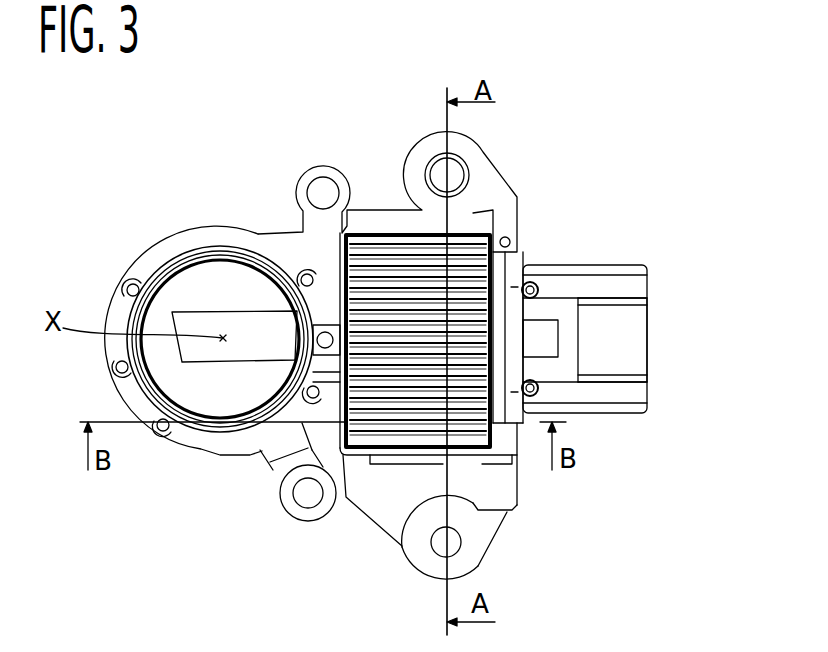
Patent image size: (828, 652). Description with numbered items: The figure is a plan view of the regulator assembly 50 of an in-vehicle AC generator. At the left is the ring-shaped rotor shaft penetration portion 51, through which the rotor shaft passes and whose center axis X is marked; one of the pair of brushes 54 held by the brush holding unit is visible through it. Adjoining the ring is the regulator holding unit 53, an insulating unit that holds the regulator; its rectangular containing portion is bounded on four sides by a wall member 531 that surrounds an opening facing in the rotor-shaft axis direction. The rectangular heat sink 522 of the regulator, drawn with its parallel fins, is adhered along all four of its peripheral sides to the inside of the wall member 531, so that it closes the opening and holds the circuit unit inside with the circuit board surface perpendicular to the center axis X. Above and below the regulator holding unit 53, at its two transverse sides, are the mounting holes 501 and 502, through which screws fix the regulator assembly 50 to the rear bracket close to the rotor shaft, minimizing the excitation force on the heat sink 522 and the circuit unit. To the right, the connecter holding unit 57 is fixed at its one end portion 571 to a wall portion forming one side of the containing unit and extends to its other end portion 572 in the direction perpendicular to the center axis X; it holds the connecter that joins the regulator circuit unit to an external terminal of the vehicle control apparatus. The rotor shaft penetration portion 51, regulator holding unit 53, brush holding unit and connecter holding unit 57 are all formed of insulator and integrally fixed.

The regulator assembly 50 is at (360, 163).
The rotor shaft penetration portion 51 is at (202, 445).
The brush 54 is at (215, 320).
The regulator holding unit 53 is at (482, 457).
The wall member 531 is at (358, 455).
The heat sink 522 is at (487, 245).
The mounting hole 501 is at (462, 168).
The mounting hole 502 is at (455, 555).
The connecter holding unit 57 is at (620, 410).
The one end portion 571 is at (527, 265).
The other end portion 572 is at (648, 265).